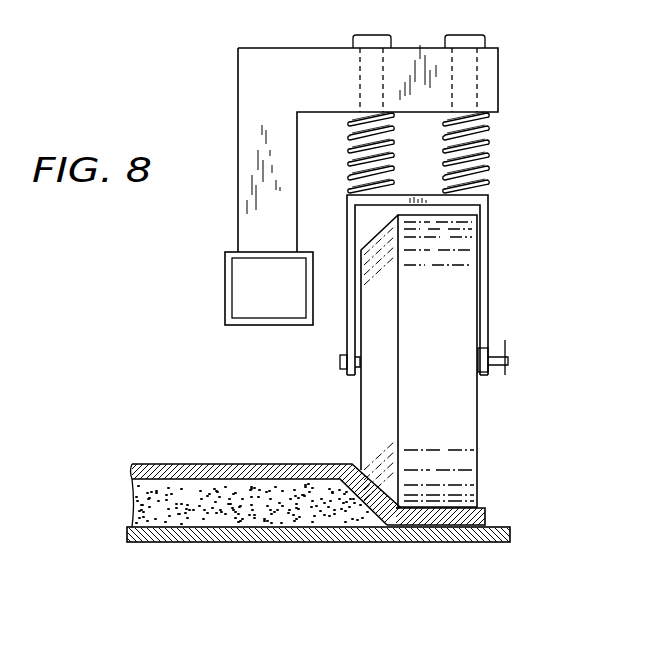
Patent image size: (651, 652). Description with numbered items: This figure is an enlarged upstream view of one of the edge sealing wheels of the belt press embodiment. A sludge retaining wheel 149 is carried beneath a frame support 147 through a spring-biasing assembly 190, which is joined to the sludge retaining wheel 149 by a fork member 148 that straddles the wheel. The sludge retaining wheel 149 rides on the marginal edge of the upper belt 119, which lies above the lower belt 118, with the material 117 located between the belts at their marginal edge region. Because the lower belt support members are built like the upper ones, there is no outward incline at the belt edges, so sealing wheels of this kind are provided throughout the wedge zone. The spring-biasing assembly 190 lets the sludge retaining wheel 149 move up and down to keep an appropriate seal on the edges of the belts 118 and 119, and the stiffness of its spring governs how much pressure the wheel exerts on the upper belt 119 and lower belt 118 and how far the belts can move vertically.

The frame support 147 is at (260, 76).
The spring-biasing assembly 190 is at (488, 158).
The fork member 148 is at (487, 262).
The sludge retaining wheel 149 is at (463, 445).
The upper belt 119 is at (197, 463).
The middle layer 117 is at (140, 507).
The lower belt 118 is at (175, 538).